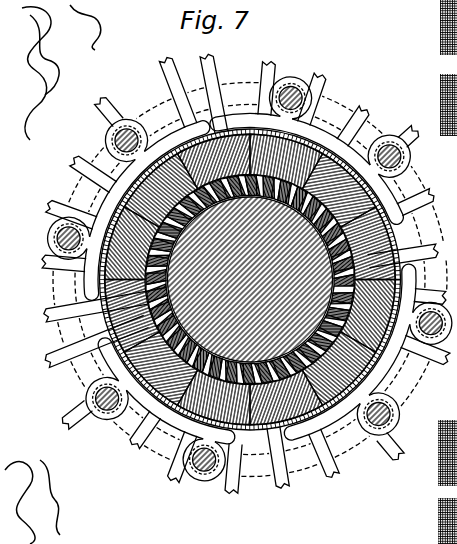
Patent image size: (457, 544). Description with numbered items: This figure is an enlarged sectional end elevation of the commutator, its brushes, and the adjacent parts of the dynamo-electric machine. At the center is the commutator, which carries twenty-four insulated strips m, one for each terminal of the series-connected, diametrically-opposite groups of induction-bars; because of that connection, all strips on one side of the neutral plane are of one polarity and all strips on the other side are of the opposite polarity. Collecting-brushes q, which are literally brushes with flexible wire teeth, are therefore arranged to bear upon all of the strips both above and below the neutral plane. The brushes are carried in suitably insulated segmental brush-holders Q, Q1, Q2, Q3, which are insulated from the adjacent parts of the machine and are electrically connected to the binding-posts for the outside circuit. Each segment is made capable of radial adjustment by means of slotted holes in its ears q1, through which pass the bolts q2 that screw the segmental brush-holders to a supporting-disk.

The insulated strip m is at (249, 279).
The collecting-brush q is at (246, 273).
The ear q1 is at (250, 279).
The bolt q2 is at (372, 426).
The segmental brush-holder Q is at (147, 211).
The segmental brush-holder Q1 is at (306, 168).
The segmental brush-holder Q2 is at (166, 391).
The segmental brush-holder Q3 is at (350, 352).